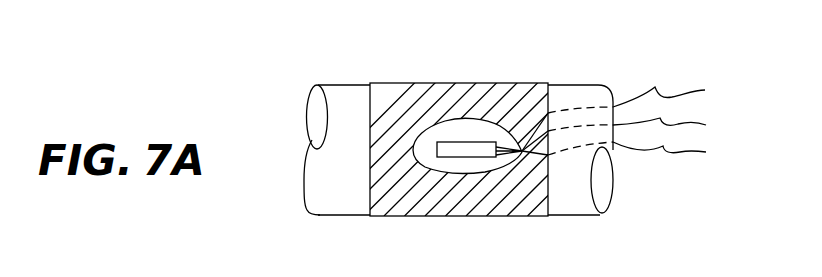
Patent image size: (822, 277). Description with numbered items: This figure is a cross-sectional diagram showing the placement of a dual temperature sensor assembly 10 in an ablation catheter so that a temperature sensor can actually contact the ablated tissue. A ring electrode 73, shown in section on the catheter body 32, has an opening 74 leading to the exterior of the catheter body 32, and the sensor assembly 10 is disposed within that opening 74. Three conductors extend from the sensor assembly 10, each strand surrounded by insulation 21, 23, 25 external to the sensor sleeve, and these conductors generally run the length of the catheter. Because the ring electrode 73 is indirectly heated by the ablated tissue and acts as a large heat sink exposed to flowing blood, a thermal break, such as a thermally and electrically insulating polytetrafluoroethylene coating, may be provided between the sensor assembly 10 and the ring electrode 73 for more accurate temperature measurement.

The sensor assembly 10 is at (459, 157).
The ring electrode 73 is at (500, 88).
The opening 74 is at (452, 121).
The catheter body 32 is at (572, 216).
The insulation 21 is at (635, 115).
The insulation 23 is at (635, 131).
The insulation 25 is at (635, 158).